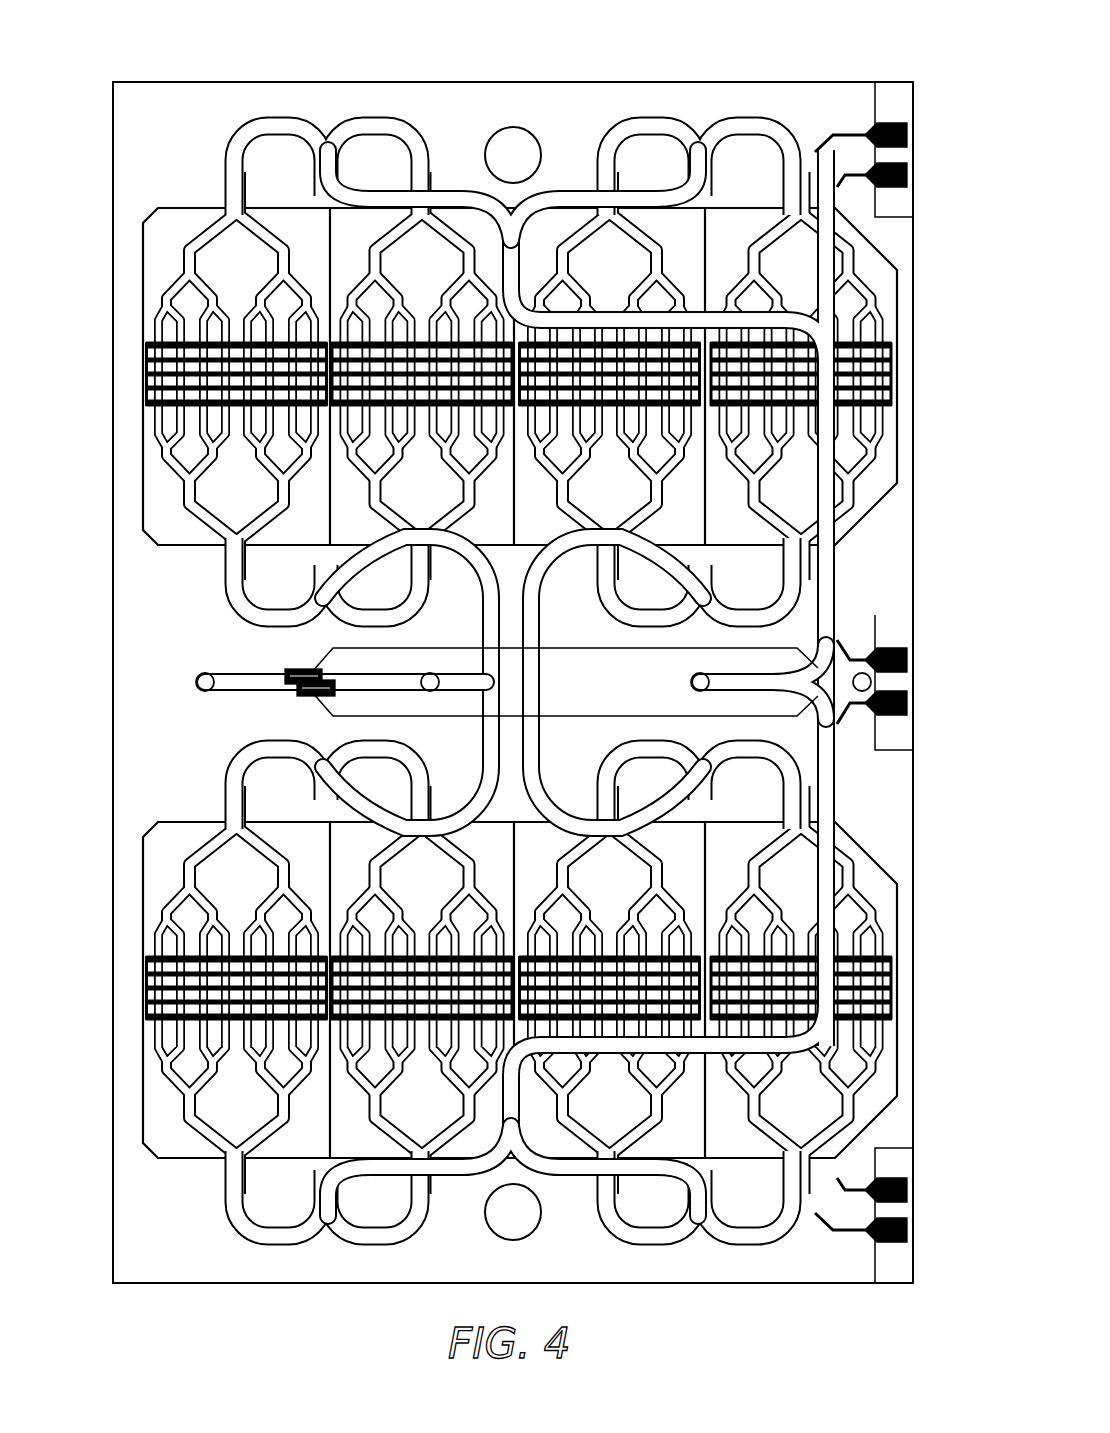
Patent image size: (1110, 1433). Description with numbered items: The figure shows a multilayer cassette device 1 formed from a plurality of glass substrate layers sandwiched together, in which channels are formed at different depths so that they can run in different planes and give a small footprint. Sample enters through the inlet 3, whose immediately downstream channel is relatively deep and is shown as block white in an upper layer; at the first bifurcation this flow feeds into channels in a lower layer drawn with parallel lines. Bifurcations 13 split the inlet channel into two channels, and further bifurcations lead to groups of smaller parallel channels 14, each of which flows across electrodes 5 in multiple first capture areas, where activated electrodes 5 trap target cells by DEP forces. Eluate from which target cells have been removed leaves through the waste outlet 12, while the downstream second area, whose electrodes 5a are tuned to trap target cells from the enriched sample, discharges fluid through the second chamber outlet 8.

The cassette device 1 is at (853, 55).
The parallel channels 14 is at (300, 332).
The electrodes 5 is at (892, 355).
The electrodes 5a is at (292, 673).
The waste outlet 12 is at (432, 673).
The second chamber outlet 8 is at (196, 682).
The inlet 3 is at (691, 682).
The bifurcations 13 is at (855, 720).